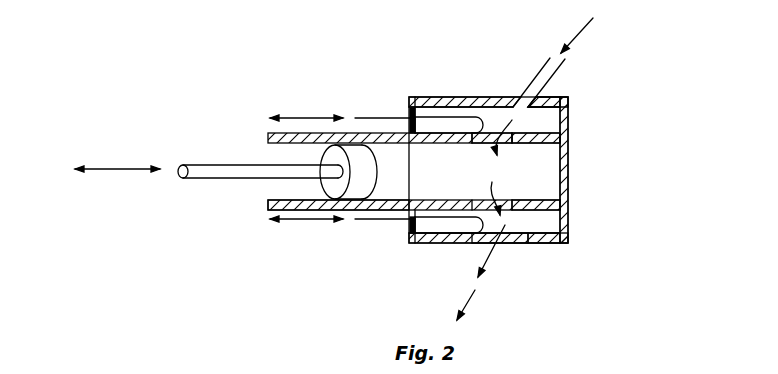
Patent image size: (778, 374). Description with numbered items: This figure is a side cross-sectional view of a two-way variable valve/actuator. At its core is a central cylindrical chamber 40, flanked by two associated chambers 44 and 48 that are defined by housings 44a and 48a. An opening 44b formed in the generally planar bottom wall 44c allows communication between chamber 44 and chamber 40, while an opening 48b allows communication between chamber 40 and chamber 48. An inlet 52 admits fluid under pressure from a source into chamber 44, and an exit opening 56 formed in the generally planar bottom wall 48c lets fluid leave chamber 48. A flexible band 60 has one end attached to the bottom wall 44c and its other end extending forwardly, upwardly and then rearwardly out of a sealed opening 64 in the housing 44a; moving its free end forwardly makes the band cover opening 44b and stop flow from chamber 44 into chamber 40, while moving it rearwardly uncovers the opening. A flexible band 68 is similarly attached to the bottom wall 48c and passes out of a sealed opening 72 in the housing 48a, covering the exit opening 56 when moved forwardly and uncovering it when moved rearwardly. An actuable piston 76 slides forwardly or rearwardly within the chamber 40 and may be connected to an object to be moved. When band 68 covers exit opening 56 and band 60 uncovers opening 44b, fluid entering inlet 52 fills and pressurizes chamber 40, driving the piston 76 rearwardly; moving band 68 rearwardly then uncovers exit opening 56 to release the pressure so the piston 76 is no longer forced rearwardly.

The central cylindrical chamber 40 is at (545, 183).
The chamber 44 is at (545, 122).
The housing 44a is at (550, 103).
The opening 44b is at (481, 144).
The bottom wall 44c is at (553, 145).
The chamber 48 is at (535, 222).
The housing 48a is at (560, 237).
The opening 48b is at (556, 211).
The bottom wall 48c is at (527, 241).
The inlet 52 is at (537, 82).
The exit opening 56 is at (478, 243).
The flexible band 60 is at (370, 118).
The opening 64 is at (408, 116).
The flexible band 68 is at (362, 219).
The opening 72 is at (407, 222).
The actuable piston 76 is at (203, 147).